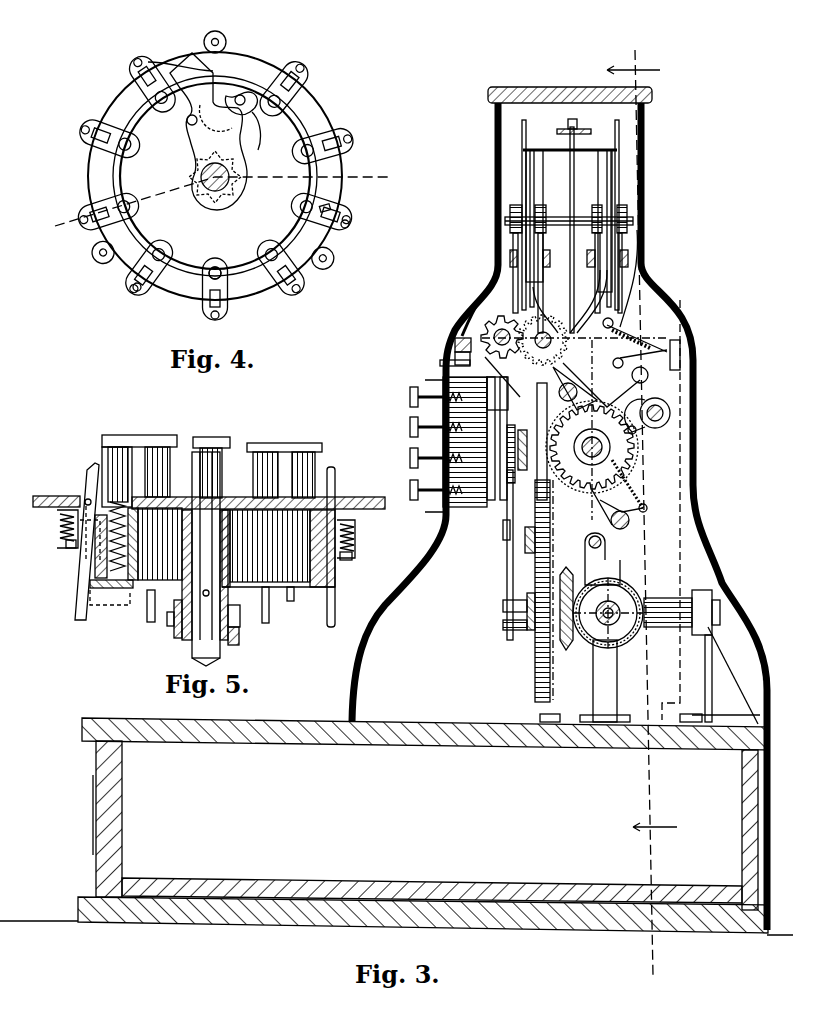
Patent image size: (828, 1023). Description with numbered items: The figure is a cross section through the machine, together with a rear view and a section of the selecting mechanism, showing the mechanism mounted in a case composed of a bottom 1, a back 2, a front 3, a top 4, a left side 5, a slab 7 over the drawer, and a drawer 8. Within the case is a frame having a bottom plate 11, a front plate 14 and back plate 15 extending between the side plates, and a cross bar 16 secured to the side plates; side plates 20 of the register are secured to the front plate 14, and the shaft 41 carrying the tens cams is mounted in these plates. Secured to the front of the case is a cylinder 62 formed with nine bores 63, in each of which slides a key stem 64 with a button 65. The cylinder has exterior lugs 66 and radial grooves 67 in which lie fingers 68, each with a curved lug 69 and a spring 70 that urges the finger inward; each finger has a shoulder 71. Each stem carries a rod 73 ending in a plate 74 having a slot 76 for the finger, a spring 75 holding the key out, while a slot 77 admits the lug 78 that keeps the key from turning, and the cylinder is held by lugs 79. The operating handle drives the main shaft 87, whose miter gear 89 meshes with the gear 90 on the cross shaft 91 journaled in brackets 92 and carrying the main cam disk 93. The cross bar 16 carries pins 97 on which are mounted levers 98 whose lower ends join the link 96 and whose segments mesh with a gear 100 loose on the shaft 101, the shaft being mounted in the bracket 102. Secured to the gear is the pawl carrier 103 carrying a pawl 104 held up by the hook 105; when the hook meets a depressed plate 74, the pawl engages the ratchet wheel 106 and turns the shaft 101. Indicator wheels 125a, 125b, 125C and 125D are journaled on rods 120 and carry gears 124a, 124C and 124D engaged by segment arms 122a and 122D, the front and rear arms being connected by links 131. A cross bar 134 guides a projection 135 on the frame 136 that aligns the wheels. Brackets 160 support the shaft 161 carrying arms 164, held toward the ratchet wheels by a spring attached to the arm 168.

In FIG. 3, the bottom 1 is at (556, 936).
In FIG. 3, the back 2 is at (714, 510).
In FIG. 5, the front 3 is at (360, 500).
In FIG. 3, the front 3 is at (494, 250).
In FIG. 3, the top 4 is at (537, 88).
In FIG. 4, the left side 5 is at (221, 204).
In FIG. 3, the left side 5 is at (435, 633).
In FIG. 3, the slab 7 is at (425, 723).
In FIG. 3, the drawer 8 is at (425, 825).
In FIG. 3, the bottom plate 11 is at (540, 712).
In FIG. 3, the front plate 14 is at (490, 297).
In FIG. 3, the back plate 15 is at (650, 285).
In FIG. 3, the cross bar 16 is at (525, 540).
In FIG. 3, the side plates 20 is at (455, 322).
In FIG. 3, the shaft 41 is at (669, 413).
In FIG. 4, the cylinder 62 is at (215, 176).
In FIG. 5, the cylinder 62 is at (322, 495).
In FIG. 3, the cylinder 62 is at (460, 500).
In FIG. 5, the bores 63 is at (108, 565).
In FIG. 5, the key stem 64 is at (115, 460).
In FIG. 5, the button 65 is at (160, 435).
In FIG. 3, the button 65 is at (410, 428).
In FIG. 5, the lug 66 is at (60, 518).
In FIG. 5, the grooves 67 is at (100, 560).
In FIG. 4, the finger 68 is at (300, 288).
In FIG. 5, the finger 68 is at (80, 590).
In FIG. 3, the finger 68 is at (443, 385).
In FIG. 4, the curved lug 69 is at (342, 232).
In FIG. 5, the curved lug 69 is at (62, 545).
In FIG. 4, the spring 70 is at (340, 214).
In FIG. 5, the spring 70 is at (62, 532).
In FIG. 5, the shoulder 71 is at (100, 598).
In FIG. 4, the rod 73 is at (270, 255).
In FIG. 5, the rod 73 is at (125, 532).
In FIG. 4, the plate 74 is at (240, 297).
In FIG. 5, the plate 74 is at (108, 590).
In FIG. 5, the spring 75 is at (125, 560).
In FIG. 4, the slot 76 is at (345, 207).
In FIG. 5, the slot 76 is at (95, 620).
In FIG. 5, the slot 77 is at (100, 500).
In FIG. 5, the lug 78 is at (93, 480).
In FIG. 4, the lugs 79 is at (100, 258).
In FIG. 3, the lugs 79 is at (455, 362).
In FIG. 3, the main shaft 87 is at (598, 640).
In FIG. 3, the miter gear 89 is at (640, 602).
In FIG. 3, the gear 90 is at (567, 567).
In FIG. 3, the cross shaft 91 is at (662, 628).
In FIG. 3, the brackets 92 is at (605, 641).
In FIG. 3, the main operating cam disk 93 is at (535, 676).
In FIG. 3, the link 96 is at (515, 630).
In FIG. 3, the pins 97 is at (503, 530).
In FIG. 3, the levers 98 is at (508, 555).
In FIG. 5, the gear 100 is at (240, 640).
In FIG. 4, the shaft 101 is at (213, 195).
In FIG. 5, the shaft 101 is at (214, 650).
In FIG. 3, the bracket 102 is at (560, 490).
In FIG. 4, the pawl carrier 103 is at (213, 78).
In FIG. 5, the pawl carrier 103 is at (173, 618).
In FIG. 4, the pawl 104 is at (250, 118).
In FIG. 4, the hook 105 is at (244, 126).
In FIG. 4, the ratchet wheel 106 is at (186, 174).
In FIG. 5, the ratchet wheel 106 is at (241, 615).
In FIG. 3, the rods 120 is at (582, 222).
In FIG. 3, the segment arm 122a is at (625, 258).
In FIG. 3, the segment arm 122D is at (513, 240).
In FIG. 3, the gear 124a is at (630, 207).
In FIG. 3, the gear 124C is at (552, 200).
In FIG. 3, the gear 124D is at (508, 207).
In FIG. 3, the indicator wheel 125a is at (612, 170).
In FIG. 3, the indicator wheel 125b is at (619, 138).
In FIG. 3, the indicator wheel 125C is at (521, 137).
In FIG. 3, the indicator wheel 125D is at (529, 165).
In FIG. 3, the links 131 is at (568, 272).
In FIG. 3, the cross bar 134 is at (590, 127).
In FIG. 3, the projection 135 is at (568, 126).
In FIG. 3, the frame 136 is at (570, 180).
In FIG. 3, the brackets 160 is at (610, 510).
In FIG. 3, the shaft 161 is at (622, 529).
In FIG. 3, the arms 164 is at (628, 470).
In FIG. 3, the arm 168 is at (645, 512).